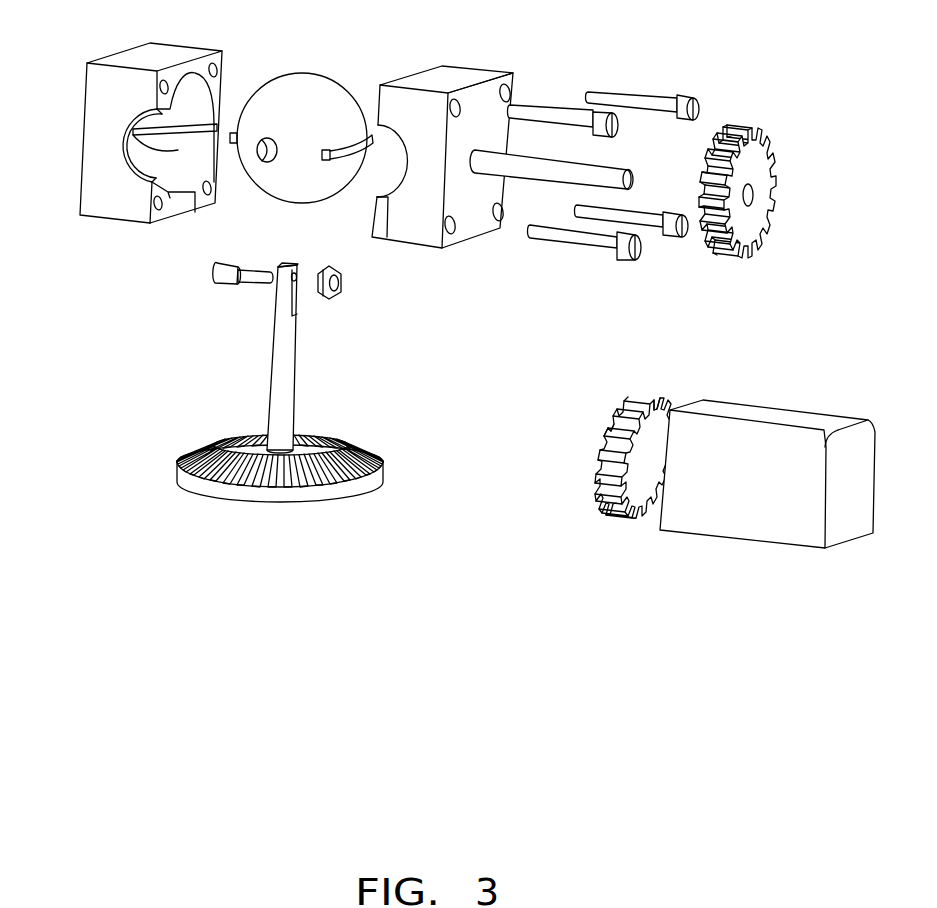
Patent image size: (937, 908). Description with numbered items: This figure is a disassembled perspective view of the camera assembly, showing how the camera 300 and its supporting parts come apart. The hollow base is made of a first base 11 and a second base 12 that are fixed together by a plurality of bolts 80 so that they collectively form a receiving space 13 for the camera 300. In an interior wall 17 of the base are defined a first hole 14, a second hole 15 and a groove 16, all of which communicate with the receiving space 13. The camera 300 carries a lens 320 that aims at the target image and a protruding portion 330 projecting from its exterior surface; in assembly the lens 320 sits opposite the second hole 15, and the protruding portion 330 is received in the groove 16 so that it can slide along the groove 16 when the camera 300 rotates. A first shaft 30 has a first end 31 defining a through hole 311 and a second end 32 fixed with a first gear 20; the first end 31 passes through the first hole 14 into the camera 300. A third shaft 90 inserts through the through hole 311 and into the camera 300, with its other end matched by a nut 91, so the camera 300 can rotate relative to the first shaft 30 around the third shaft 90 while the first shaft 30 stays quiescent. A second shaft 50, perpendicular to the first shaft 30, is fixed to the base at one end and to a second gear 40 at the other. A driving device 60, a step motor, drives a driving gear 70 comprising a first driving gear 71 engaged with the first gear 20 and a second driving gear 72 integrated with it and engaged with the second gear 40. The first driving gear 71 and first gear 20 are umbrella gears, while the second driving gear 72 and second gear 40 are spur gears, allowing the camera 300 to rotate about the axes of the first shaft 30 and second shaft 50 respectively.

The first base 11 is at (135, 148).
The second base 12 is at (437, 75).
The receiving space 13 is at (191, 88).
The first hole 14 is at (180, 212).
The second hole 15 is at (157, 160).
The groove 16 is at (208, 128).
The interior wall 17 is at (157, 146).
The first gear 20 is at (265, 495).
The first shaft 30 is at (281, 358).
The first end 31 is at (296, 305).
The through hole 311 is at (299, 283).
The second end 32 is at (296, 447).
The second gear 40 is at (757, 155).
The second shaft 50 is at (604, 173).
The driving device 60 is at (800, 537).
The driving gear 70 is at (667, 420).
The first driving gear 71 is at (618, 410).
The second driving gear 72 is at (662, 387).
The bolts 80 is at (631, 100).
The third shaft 90 is at (227, 279).
The nut 91 is at (347, 285).
The camera 300 is at (294, 128).
The lens 320 is at (263, 153).
The protruding portion 330 is at (341, 157).